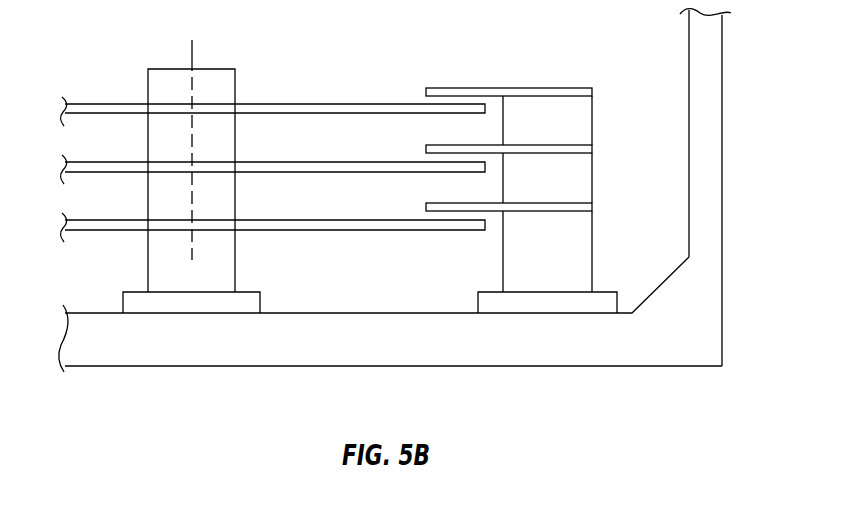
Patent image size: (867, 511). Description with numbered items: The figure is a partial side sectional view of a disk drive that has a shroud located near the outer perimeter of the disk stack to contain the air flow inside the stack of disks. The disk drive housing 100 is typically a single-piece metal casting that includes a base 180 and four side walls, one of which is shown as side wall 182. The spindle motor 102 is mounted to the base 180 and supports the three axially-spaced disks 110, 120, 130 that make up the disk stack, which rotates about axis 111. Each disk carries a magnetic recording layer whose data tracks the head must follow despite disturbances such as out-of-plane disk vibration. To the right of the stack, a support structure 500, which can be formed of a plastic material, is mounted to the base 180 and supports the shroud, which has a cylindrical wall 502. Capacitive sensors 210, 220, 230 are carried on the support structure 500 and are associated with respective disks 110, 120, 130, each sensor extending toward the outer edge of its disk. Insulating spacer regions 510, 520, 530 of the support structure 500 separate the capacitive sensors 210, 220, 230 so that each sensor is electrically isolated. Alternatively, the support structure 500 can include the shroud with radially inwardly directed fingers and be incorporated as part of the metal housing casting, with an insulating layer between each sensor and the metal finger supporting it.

The disk drive housing 100 is at (432, 206).
The spindle motor 102 is at (133, 291).
The disk 110 is at (272, 103).
The axis 111 is at (190, 57).
The disk 120 is at (272, 162).
The disk 130 is at (272, 220).
The base 180 is at (590, 367).
The side wall 182 is at (708, 77).
The capacitive sensor 210 is at (449, 88).
The capacitive sensor 220 is at (449, 145).
The capacitive sensor 230 is at (449, 203).
The support structure 500 is at (584, 168).
The cylindrical wall 502 is at (503, 250).
The insulating spacer region 510 is at (580, 130).
The insulating spacer region 520 is at (580, 190).
The insulating spacer region 530 is at (580, 250).